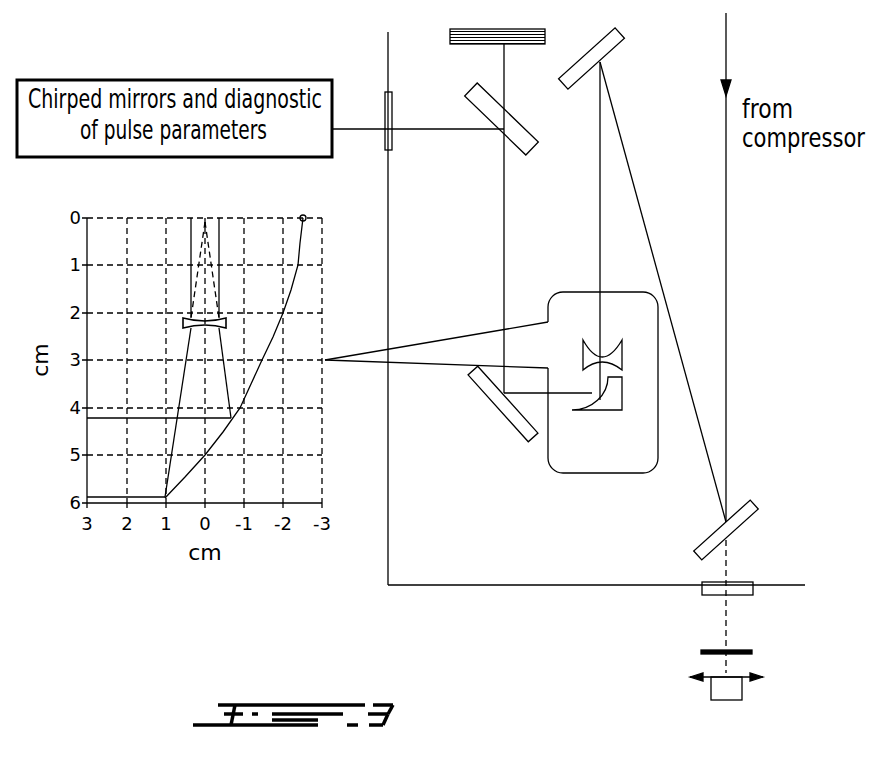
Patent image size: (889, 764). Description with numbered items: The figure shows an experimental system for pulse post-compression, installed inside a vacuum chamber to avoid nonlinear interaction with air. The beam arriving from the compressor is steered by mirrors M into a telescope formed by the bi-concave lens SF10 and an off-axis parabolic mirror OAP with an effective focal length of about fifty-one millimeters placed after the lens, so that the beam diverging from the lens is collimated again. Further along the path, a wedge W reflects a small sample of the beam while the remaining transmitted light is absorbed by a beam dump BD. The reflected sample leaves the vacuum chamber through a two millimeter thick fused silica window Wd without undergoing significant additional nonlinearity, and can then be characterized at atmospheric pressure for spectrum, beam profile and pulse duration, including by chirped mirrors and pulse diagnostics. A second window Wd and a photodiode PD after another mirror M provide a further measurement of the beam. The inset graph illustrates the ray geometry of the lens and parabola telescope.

The mirror M is at (626, 294).
The wedge W is at (503, 119).
The beam dump BD is at (481, 42).
The window Wd is at (566, 322).
The bi-concave lens SF10 is at (603, 382).
The off-axis parabolic mirror OAP is at (598, 419).
The photodiode PD is at (749, 691).